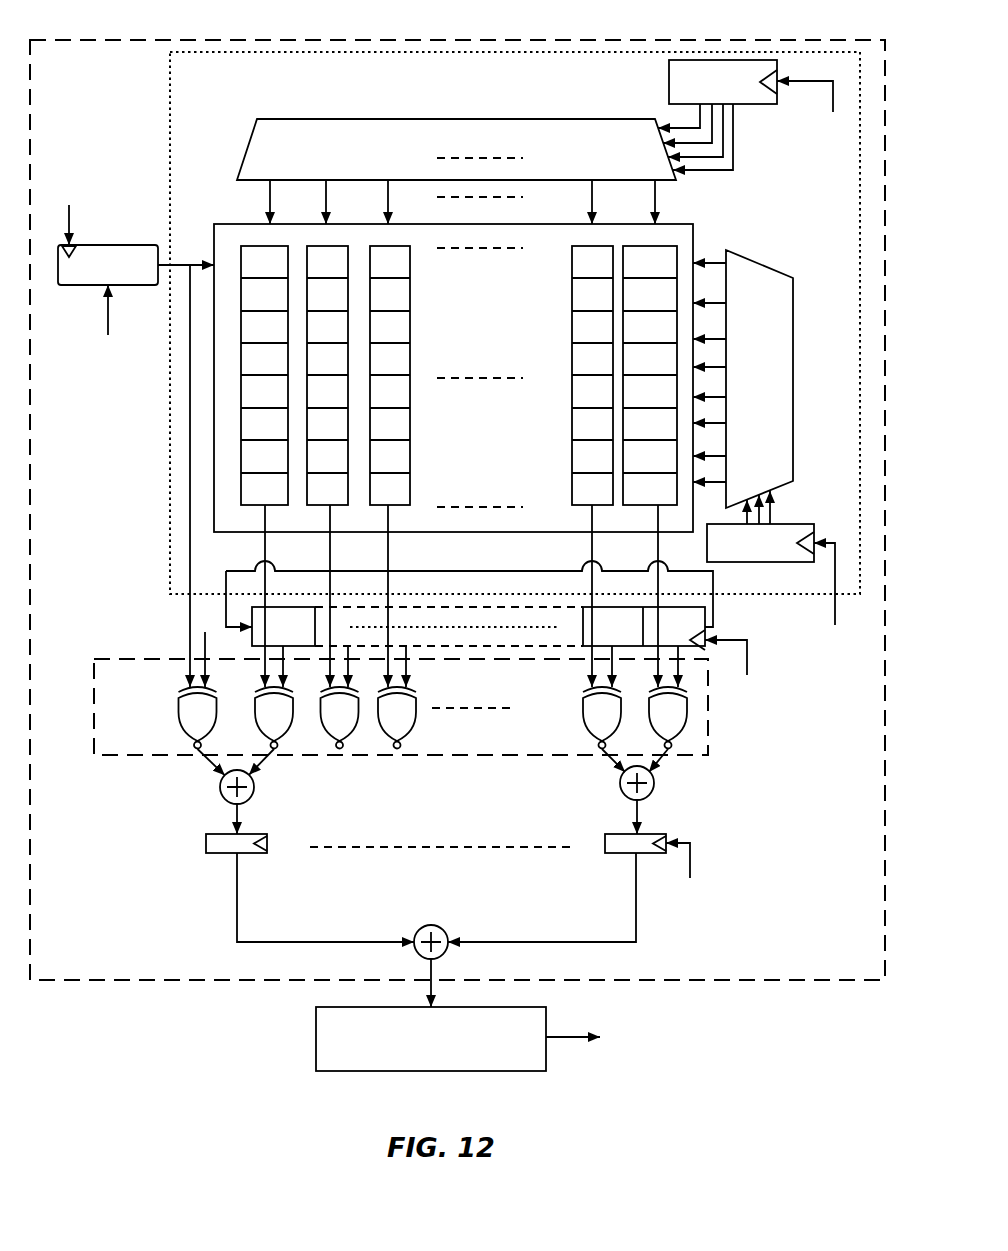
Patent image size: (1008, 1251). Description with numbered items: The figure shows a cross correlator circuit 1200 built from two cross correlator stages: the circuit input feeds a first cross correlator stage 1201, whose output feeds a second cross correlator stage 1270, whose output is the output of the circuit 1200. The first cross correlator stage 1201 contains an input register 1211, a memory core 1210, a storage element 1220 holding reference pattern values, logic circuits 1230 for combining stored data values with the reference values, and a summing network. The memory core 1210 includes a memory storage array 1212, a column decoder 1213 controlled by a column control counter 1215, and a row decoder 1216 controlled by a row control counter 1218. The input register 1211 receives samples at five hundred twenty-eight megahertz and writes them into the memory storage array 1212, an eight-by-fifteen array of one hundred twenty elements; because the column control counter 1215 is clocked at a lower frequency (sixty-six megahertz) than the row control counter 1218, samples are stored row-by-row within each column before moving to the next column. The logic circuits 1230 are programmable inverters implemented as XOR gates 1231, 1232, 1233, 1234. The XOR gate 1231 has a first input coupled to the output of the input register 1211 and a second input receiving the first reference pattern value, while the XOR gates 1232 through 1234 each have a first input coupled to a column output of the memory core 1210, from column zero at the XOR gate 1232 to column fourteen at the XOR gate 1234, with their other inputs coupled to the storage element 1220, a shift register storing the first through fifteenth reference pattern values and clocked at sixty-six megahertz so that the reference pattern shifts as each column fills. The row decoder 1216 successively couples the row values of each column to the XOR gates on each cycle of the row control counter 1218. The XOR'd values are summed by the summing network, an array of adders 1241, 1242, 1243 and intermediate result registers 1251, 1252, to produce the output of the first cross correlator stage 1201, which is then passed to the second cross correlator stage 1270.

The cross correlator circuit 1200 is at (168, 28).
The first cross correlator stage 1201 is at (106, 75).
The memory core 1210 is at (528, 88).
The input register 1211 is at (137, 245).
The memory storage array 1212 is at (496, 323).
The column decoder 1213 is at (255, 126).
The column control counter 1215 is at (736, 60).
The row decoder 1216 is at (835, 318).
The row control counter 1218 is at (820, 523).
The storage element 1220 is at (423, 657).
The logic circuits 1230 is at (118, 658).
The XOR gate 1231 is at (178, 712).
The XOR gate 1232 is at (280, 735).
The XOR gate 1233 is at (590, 718).
The XOR gate 1234 is at (688, 722).
The adder 1241 is at (222, 797).
The adder 1242 is at (620, 790).
The adder 1243 is at (432, 888).
The intermediate result register 1251 is at (206, 843).
The intermediate result register 1252 is at (605, 848).
The second cross correlator stage 1270 is at (316, 1035).